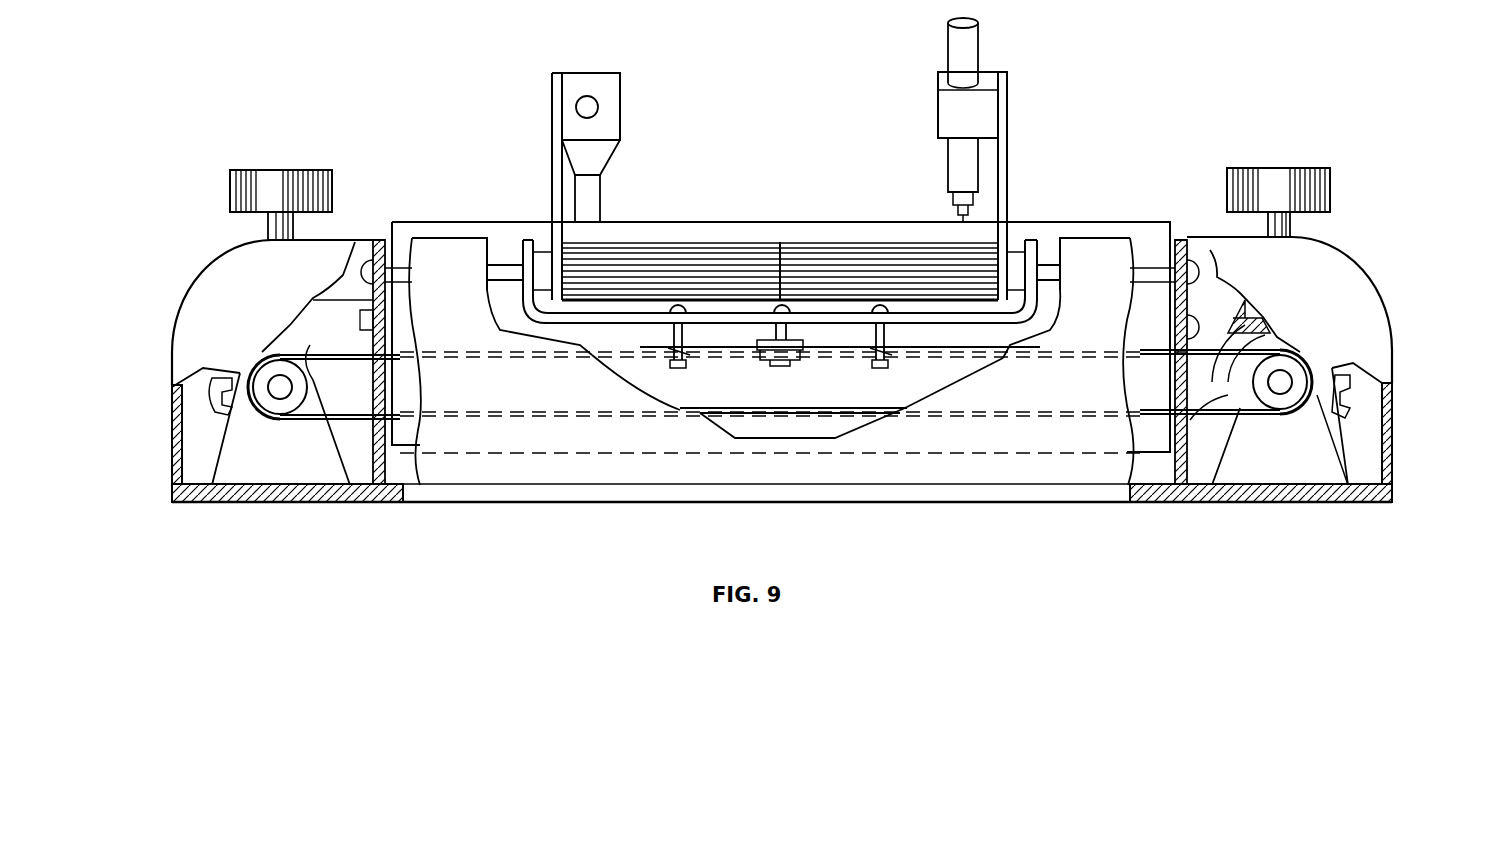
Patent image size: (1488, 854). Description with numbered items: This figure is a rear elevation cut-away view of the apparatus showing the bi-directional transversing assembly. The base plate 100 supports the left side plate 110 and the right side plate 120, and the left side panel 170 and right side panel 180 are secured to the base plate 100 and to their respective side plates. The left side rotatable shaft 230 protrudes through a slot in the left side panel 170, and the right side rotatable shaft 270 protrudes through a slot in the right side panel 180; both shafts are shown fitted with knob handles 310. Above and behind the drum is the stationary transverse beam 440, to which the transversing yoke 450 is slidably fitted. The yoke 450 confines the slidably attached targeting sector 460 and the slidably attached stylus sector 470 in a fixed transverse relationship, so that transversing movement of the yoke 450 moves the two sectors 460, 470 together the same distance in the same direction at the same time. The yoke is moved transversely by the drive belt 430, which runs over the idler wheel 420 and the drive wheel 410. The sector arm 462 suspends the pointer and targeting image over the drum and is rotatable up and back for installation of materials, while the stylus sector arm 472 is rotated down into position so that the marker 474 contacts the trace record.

The base plate 100 is at (1165, 497).
The left side plate 110 is at (1218, 470).
The right side plate 120 is at (340, 470).
The left side panel 170 is at (1392, 462).
The right side panel 180 is at (172, 445).
The left side rotatable shaft 230 is at (1292, 225).
The right side rotatable shaft 270 is at (268, 224).
The knob handles 310 is at (300, 170).
The drive wheel 410 is at (1278, 414).
The idler wheel 420 is at (282, 420).
The drive belt 430 is at (773, 440).
The transverse beam 440 is at (512, 262).
The transversing yoke 450 is at (622, 318).
The targeting sector 460 is at (642, 243).
The stylus sector 470 is at (847, 243).
The sector arm 462 is at (552, 140).
The stylus sector arm 472 is at (1007, 132).
The marker 474 is at (945, 165).